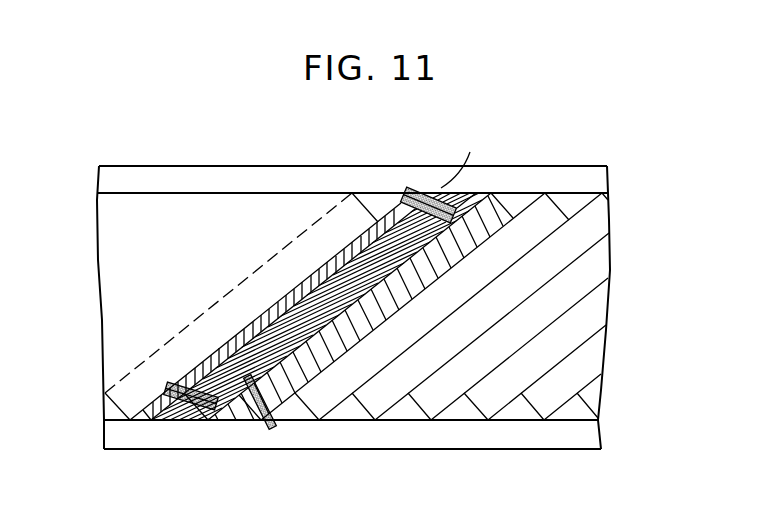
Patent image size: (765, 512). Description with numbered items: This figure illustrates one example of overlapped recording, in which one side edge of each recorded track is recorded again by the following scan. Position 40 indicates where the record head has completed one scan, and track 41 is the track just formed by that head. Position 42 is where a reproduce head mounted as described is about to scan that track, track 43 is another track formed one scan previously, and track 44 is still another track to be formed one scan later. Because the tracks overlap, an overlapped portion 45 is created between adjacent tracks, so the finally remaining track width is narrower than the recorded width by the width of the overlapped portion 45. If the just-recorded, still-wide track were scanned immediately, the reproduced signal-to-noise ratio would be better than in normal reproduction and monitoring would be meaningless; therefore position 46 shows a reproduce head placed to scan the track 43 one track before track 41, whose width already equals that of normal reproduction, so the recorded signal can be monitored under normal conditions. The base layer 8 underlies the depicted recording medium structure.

The substrate / base layer 8 is at (137, 452).
The position at which the record head has completed one scan 40 is at (409, 185).
The track just formed by the record head 41 is at (302, 358).
The position at which the reproduce head is about to scan the track 42 is at (208, 413).
The track formed one scan previously 43 is at (291, 340).
The track to be formed one scan later 44 is at (147, 368).
The overlapped portion 45 is at (322, 262).
The position of the reproduce head able to scan the track one track before 46 is at (262, 428).